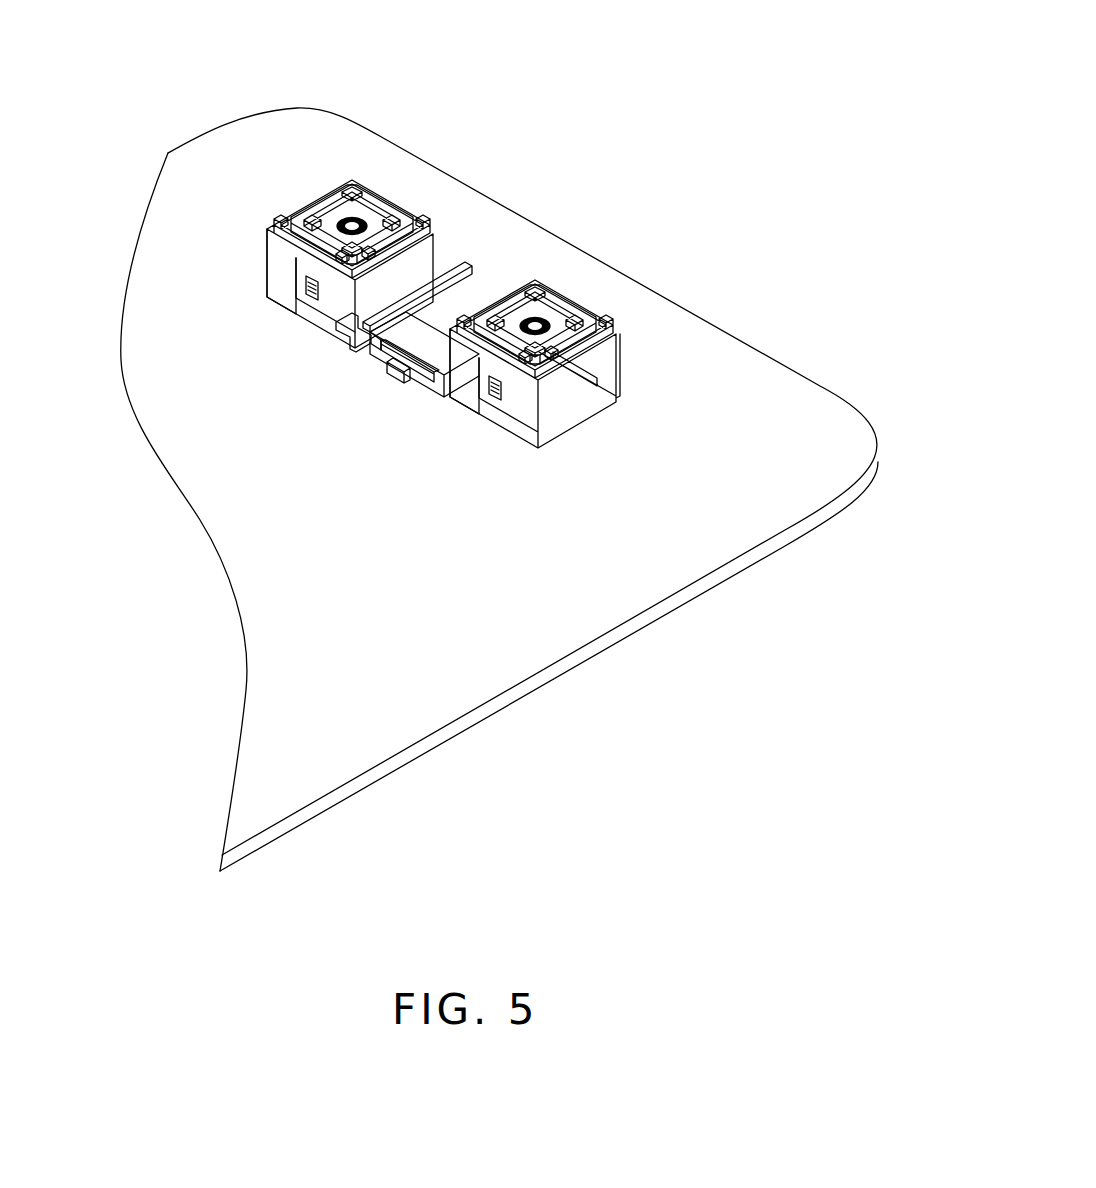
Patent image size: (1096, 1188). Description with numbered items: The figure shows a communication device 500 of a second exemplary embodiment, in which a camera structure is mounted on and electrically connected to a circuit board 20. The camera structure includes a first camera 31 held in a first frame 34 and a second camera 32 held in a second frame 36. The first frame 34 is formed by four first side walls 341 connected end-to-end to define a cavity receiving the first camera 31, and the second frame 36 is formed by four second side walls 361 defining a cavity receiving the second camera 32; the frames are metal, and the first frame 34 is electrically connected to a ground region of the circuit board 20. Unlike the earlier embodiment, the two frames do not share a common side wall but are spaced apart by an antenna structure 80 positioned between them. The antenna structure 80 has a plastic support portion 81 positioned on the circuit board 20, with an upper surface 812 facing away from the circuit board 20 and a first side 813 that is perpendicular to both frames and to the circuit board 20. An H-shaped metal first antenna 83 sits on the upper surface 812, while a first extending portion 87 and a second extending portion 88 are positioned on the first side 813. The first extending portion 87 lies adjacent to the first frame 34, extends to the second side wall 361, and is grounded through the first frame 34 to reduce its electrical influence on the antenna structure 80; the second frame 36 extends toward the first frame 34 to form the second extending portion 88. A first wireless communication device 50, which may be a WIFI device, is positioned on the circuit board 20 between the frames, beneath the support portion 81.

The communication device 500 is at (592, 59).
The circuit board 20 is at (667, 570).
The first camera 31 is at (362, 186).
The second camera 32 is at (598, 328).
The first frame 34 is at (296, 242).
The second frame 36 is at (641, 508).
The first side wall 341 is at (265, 266).
The second side wall 361 is at (515, 432).
The antenna structure 80 is at (391, 398).
The support portion 81 is at (391, 398).
The first antenna 83 is at (489, 296).
The first extending portion 87 is at (340, 328).
The second extending portion 88 is at (382, 358).
The upper surface 812 is at (300, 291).
The first side 813 is at (365, 345).
The first wireless communication device 50 is at (392, 375).